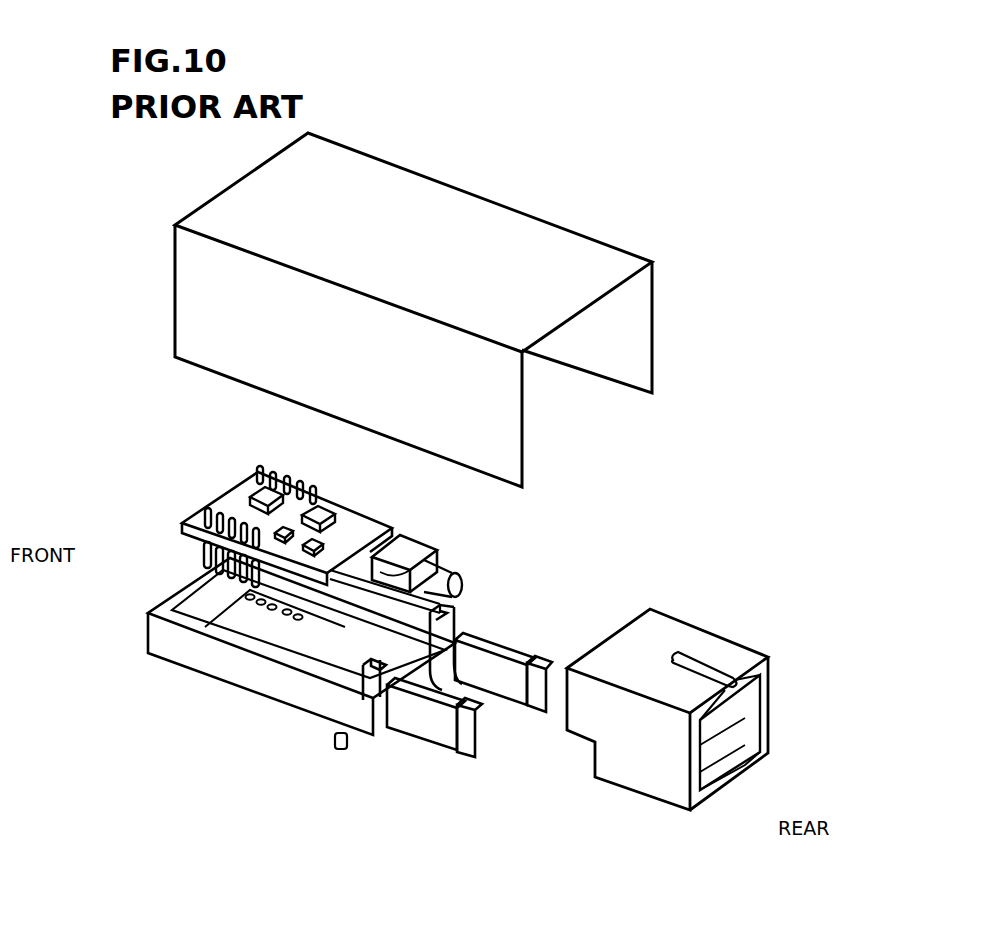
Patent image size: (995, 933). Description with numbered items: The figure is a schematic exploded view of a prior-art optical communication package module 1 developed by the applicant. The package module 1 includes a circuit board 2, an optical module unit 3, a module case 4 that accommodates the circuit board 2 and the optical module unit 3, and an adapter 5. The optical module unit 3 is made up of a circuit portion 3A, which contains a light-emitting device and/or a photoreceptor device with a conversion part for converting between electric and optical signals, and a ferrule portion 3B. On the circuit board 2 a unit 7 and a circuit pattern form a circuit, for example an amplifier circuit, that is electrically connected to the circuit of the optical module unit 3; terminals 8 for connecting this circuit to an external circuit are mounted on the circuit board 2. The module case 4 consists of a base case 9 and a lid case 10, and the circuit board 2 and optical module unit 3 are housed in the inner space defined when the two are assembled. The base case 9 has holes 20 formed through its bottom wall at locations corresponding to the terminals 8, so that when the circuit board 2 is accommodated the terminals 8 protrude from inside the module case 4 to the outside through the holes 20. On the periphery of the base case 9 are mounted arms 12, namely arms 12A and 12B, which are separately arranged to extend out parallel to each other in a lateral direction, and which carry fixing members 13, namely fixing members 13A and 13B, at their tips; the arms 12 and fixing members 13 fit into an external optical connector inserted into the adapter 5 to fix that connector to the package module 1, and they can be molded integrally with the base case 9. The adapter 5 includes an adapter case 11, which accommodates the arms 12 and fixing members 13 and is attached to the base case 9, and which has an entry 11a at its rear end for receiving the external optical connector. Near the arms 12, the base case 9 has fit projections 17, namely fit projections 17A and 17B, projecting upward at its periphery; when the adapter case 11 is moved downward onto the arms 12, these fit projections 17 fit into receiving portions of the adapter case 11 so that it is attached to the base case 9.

The package module 1 is at (721, 374).
The circuit board 2 is at (350, 526).
The optical module unit 3 is at (433, 567).
The circuit portion 3A is at (445, 603).
The ferrule portion 3B is at (470, 588).
The module case 4 is at (128, 670).
The adapter 5 is at (702, 681).
The unit 7 is at (262, 498).
The terminals 8 is at (266, 466).
The base case 9 is at (176, 662).
The lid case 10 is at (620, 304).
The adapter case 11 is at (702, 698).
The entry 11a is at (745, 706).
The arms 12 is at (529, 694).
The arm 12A is at (423, 723).
The arm 12B is at (520, 650).
The fixing members 13 is at (578, 690).
The fixing member 13A is at (470, 740).
The fixing member 13B is at (545, 660).
The fit projections 17 is at (342, 713).
The fit projection 17A is at (376, 702).
The fit projection 17B is at (432, 622).
The holes 20 is at (250, 601).